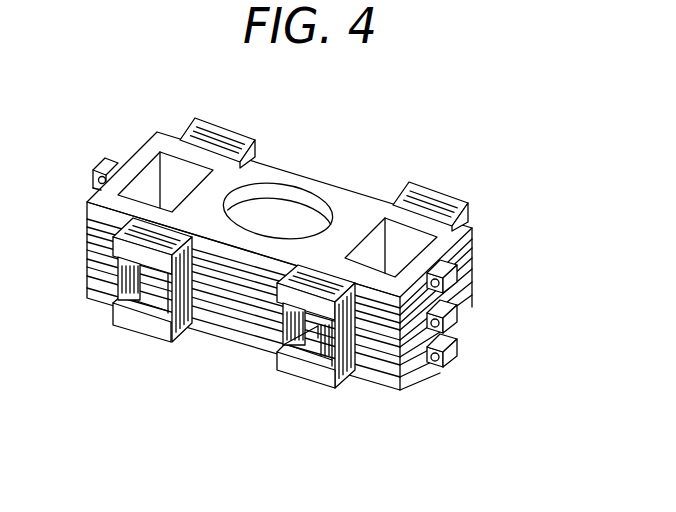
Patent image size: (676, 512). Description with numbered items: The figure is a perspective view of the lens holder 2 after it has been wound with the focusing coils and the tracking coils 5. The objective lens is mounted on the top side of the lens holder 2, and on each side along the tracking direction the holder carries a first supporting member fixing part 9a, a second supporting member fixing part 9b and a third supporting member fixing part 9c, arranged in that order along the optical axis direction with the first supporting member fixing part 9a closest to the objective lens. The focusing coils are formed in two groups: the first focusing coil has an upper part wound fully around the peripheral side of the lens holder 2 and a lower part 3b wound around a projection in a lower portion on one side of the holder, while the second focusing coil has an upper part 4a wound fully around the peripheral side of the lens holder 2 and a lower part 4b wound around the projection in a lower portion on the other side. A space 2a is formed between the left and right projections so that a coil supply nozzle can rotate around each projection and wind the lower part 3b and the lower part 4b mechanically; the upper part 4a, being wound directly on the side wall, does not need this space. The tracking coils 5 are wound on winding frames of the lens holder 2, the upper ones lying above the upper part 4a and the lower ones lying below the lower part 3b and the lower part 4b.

The lens holder 2 is at (142, 145).
The space 2a is at (238, 323).
The lower part of first focusing coil 3b is at (103, 284).
The upper part of second focusing coil 4a is at (382, 332).
The lower part of second focusing coil 4b is at (373, 353).
The tracking coil 5 is at (227, 128).
The first supporting member fixing part 9a is at (452, 278).
The second supporting member fixing part 9b is at (452, 317).
The third supporting member fixing part 9c is at (450, 358).